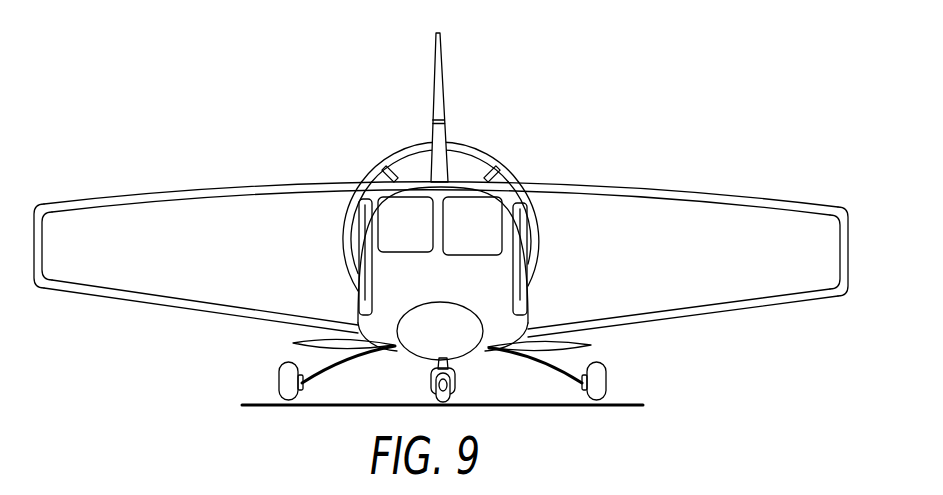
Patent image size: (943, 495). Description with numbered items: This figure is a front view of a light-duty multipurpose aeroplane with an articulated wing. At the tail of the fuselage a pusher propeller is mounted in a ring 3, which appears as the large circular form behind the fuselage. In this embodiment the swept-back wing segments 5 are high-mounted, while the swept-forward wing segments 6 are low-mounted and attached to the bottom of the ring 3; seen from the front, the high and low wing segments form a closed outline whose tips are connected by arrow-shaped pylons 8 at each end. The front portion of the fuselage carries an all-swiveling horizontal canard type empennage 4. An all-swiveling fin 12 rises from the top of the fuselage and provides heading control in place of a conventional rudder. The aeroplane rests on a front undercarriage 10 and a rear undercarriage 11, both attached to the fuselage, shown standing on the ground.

The ring 3 is at (398, 162).
The all-swiveling horizontal canard type empennage 4 is at (293, 343).
The swept-back wing segments 5 is at (147, 303).
The swept-forward wing segments 6 is at (167, 197).
The arrow-shaped pylons 8 is at (849, 236).
The front undercarriage 10 is at (456, 386).
The rear undercarriage 11 is at (299, 396).
The all-swiveling fin 12 is at (440, 97).